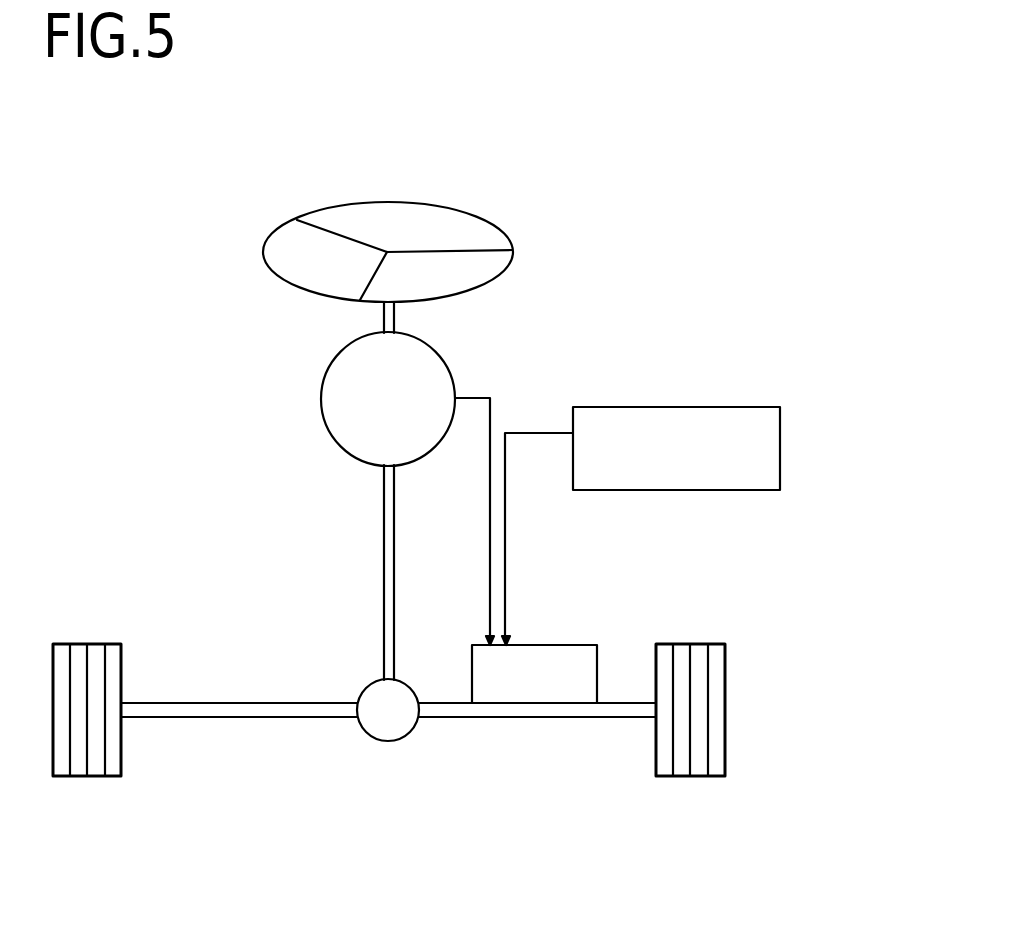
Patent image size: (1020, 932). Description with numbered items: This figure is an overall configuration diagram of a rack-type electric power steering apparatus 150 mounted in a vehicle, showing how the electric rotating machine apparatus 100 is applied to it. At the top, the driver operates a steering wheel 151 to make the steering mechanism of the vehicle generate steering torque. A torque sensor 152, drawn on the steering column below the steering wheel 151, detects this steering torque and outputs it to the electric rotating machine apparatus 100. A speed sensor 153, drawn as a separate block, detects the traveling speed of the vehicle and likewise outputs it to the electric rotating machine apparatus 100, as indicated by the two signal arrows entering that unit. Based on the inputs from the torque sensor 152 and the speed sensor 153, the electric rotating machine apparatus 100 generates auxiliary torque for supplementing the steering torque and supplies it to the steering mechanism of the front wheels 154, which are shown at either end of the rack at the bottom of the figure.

The electric rotating machine apparatus 100 is at (588, 628).
The electric power steering apparatus 150 is at (508, 193).
The steering wheel 151 is at (297, 220).
The torque sensor 152 is at (323, 418).
The speed sensor 153 is at (667, 407).
The front wheels 154 is at (725, 658).